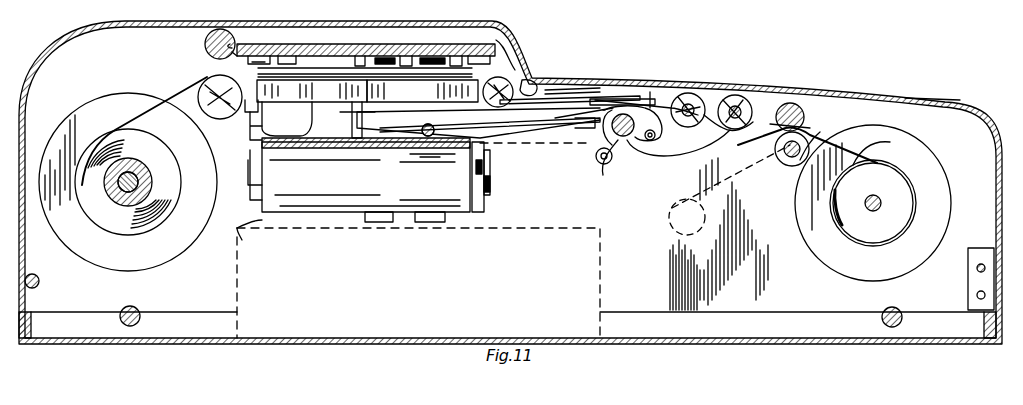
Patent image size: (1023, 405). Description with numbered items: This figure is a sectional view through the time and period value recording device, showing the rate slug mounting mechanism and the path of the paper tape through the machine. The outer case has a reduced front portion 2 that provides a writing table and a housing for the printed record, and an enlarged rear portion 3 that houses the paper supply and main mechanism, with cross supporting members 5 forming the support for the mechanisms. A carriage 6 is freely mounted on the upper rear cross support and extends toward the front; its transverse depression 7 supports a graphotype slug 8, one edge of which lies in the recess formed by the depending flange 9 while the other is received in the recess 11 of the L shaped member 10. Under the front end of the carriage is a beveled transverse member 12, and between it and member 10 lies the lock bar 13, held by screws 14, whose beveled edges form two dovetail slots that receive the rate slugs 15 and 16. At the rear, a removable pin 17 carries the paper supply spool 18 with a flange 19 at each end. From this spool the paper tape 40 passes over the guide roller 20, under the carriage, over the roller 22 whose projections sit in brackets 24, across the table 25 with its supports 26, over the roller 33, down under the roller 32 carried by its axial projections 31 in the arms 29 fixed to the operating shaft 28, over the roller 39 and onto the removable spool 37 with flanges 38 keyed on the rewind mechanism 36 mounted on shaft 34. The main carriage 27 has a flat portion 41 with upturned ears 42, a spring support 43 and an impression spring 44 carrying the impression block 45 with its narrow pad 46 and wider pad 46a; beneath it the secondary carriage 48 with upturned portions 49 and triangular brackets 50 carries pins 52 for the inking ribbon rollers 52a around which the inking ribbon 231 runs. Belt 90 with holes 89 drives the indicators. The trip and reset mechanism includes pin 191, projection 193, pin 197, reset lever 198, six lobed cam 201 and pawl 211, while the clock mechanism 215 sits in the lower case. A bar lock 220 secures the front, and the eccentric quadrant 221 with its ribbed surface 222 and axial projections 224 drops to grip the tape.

The reduced front portion 2 is at (925, 100).
The enlarged rear portion 3 is at (148, 50).
The cross supporting members 5 is at (205, 50).
The carriage 6 is at (338, 44).
The transverse depression 7 is at (285, 56).
The graphotype slug 8 is at (288, 56).
The depending flange 9 is at (262, 62).
The L shaped member 10 is at (384, 44).
The recess 11 is at (358, 44).
The transverse member 12 is at (503, 40).
The lock bar 13 is at (435, 44).
The screws 14 is at (458, 44).
The rate slug 15 is at (408, 44).
The rate slug 16 is at (482, 44).
The removable pin 17 is at (110, 210).
The paper supply spool 18 is at (150, 175).
The flange 19 is at (85, 112).
The guide roller 20 is at (222, 118).
The roller 22 is at (524, 80).
The bracket 24 is at (525, 86).
The table 25 is at (568, 90).
The support 26 is at (590, 90).
The main carriage 27 is at (560, 128).
The operating shaft 28 is at (630, 140).
The arm 29 is at (676, 176).
The axial projection 31 is at (760, 108).
The roller 32 is at (750, 97).
The roller 33 is at (700, 96).
The shaft 34 is at (882, 200).
The rewind mechanism 36 is at (845, 220).
The removable spool 37 is at (850, 245).
The flange 38 is at (855, 270).
The roller 39 is at (816, 142).
The paper tape 40 is at (862, 148).
The flat portion 41 is at (290, 134).
The upturned lug or ear 42 is at (520, 130).
The spring support 43 is at (600, 98).
The impression spring 44 is at (578, 128).
The impression block 45 is at (352, 112).
The impression pad 46 is at (312, 91).
The impression pad 46a is at (440, 82).
The secondary carriage 48 is at (254, 145).
The upturned portion 49 is at (248, 140).
The bracket 50 is at (250, 200).
The removable pin 52 is at (488, 212).
The inking ribbon roller 52a is at (490, 201).
The holes 89 is at (430, 222).
The belt 90 is at (380, 222).
The pin 191 is at (398, 160).
The finger-like projection 193 is at (366, 175).
The pin 197 is at (630, 185).
The reset lever 198 is at (648, 141).
The six lobed cam 201 is at (673, 96).
The pawl 211 is at (635, 96).
The clock mechanism 215 is at (610, 180).
The bar lock 220 is at (968, 252).
The eccentric quadrant 221 is at (793, 103).
The ribbed non-slipping surface 222 is at (774, 168).
The axial projection 224 is at (800, 110).
The inking ribbon 231 is at (233, 235).